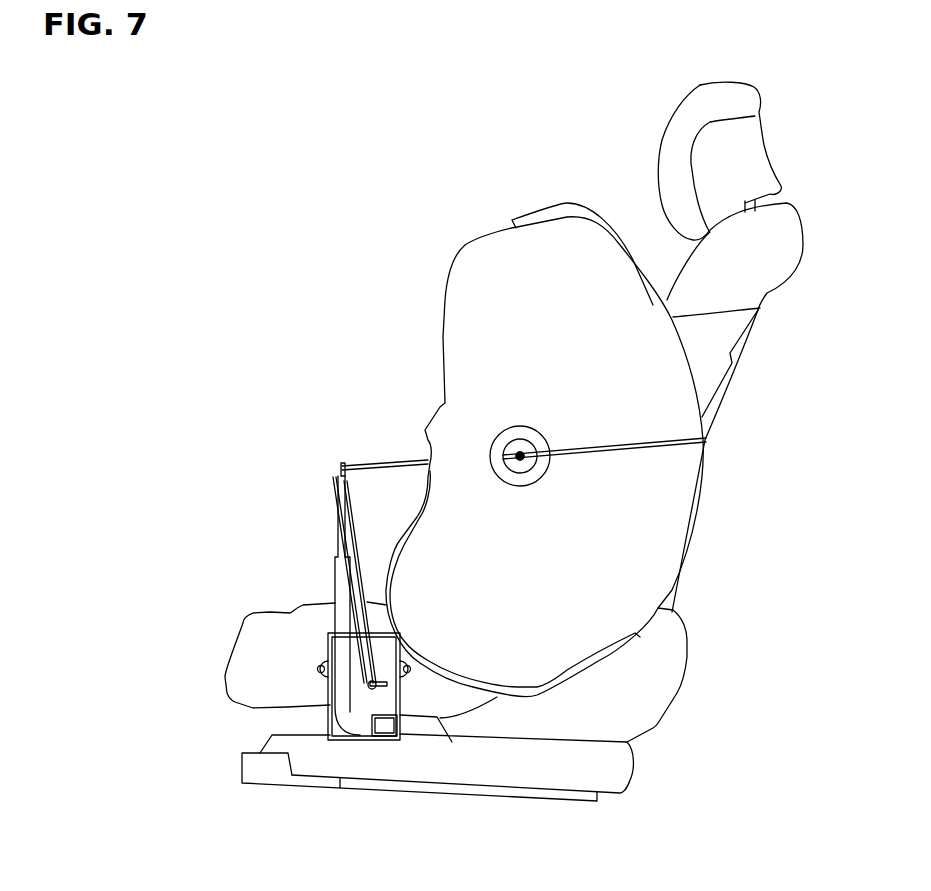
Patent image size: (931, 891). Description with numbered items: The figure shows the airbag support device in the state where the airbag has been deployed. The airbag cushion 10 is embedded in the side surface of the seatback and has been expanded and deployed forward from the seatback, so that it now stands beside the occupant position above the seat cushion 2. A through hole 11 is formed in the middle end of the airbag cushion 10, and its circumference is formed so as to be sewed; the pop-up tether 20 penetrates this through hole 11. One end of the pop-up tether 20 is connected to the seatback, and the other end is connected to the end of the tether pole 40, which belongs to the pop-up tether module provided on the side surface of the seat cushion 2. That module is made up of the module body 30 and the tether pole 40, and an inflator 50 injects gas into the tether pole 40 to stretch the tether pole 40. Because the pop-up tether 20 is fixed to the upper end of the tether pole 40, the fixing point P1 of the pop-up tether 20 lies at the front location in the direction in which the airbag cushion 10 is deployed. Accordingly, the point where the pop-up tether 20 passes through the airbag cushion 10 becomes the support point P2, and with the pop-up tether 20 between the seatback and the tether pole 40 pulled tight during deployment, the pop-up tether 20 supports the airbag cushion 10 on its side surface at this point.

The seat cushion 2 is at (220, 648).
The airbag cushion 10 is at (482, 257).
The through hole 11 is at (507, 438).
The pop-up tether 20 is at (650, 448).
The module body 30 is at (360, 707).
The tether pole 40 is at (338, 572).
The inflator 50 is at (385, 728).
The fixing point P1 is at (333, 472).
The support point P2 is at (527, 463).